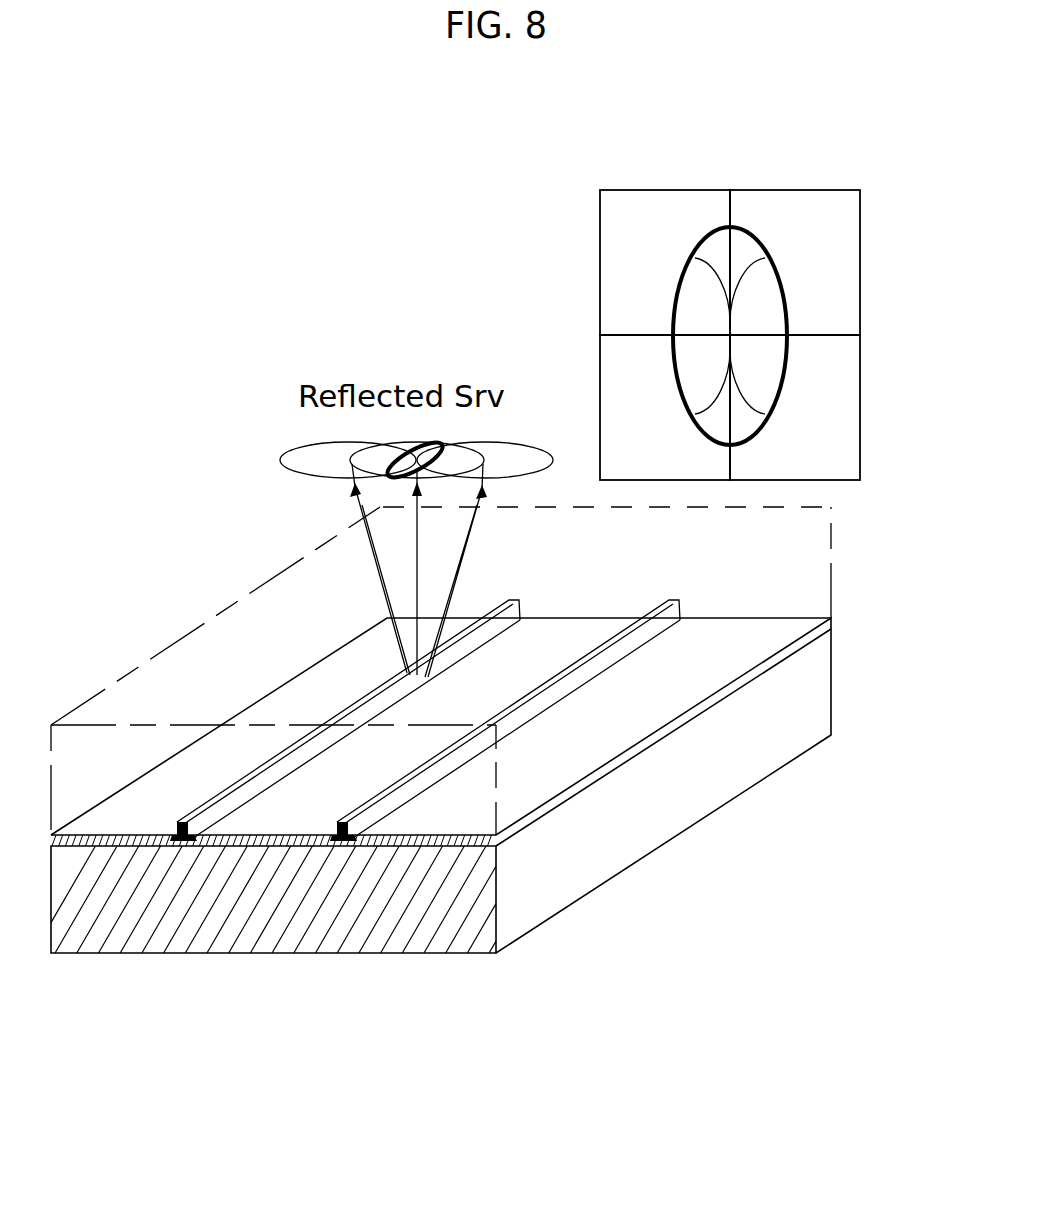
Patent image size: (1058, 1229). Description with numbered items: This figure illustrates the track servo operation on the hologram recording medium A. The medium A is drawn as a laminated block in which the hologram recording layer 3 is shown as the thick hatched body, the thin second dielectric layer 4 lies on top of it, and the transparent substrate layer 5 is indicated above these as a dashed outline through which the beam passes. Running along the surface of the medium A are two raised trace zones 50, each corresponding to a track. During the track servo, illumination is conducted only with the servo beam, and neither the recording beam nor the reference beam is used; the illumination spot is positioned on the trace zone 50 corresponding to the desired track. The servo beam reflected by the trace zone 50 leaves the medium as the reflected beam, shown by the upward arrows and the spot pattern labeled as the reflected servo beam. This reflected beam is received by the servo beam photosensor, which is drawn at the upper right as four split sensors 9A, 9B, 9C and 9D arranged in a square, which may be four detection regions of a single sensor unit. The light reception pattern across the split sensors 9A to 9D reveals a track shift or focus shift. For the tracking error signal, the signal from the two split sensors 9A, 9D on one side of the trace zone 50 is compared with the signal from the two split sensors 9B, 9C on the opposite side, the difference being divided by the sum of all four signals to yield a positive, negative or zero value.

The hologram recording layer 3 is at (813, 722).
The second dielectric layer 4 is at (815, 638).
The transparent substrate layer 5 is at (832, 572).
The trace zone 50 is at (350, 715).
The split sensor 9A is at (667, 198).
The split sensor 9B is at (797, 198).
The split sensor 9C is at (850, 442).
The split sensor 9D is at (610, 367).
The hologram recording medium A is at (375, 1004).